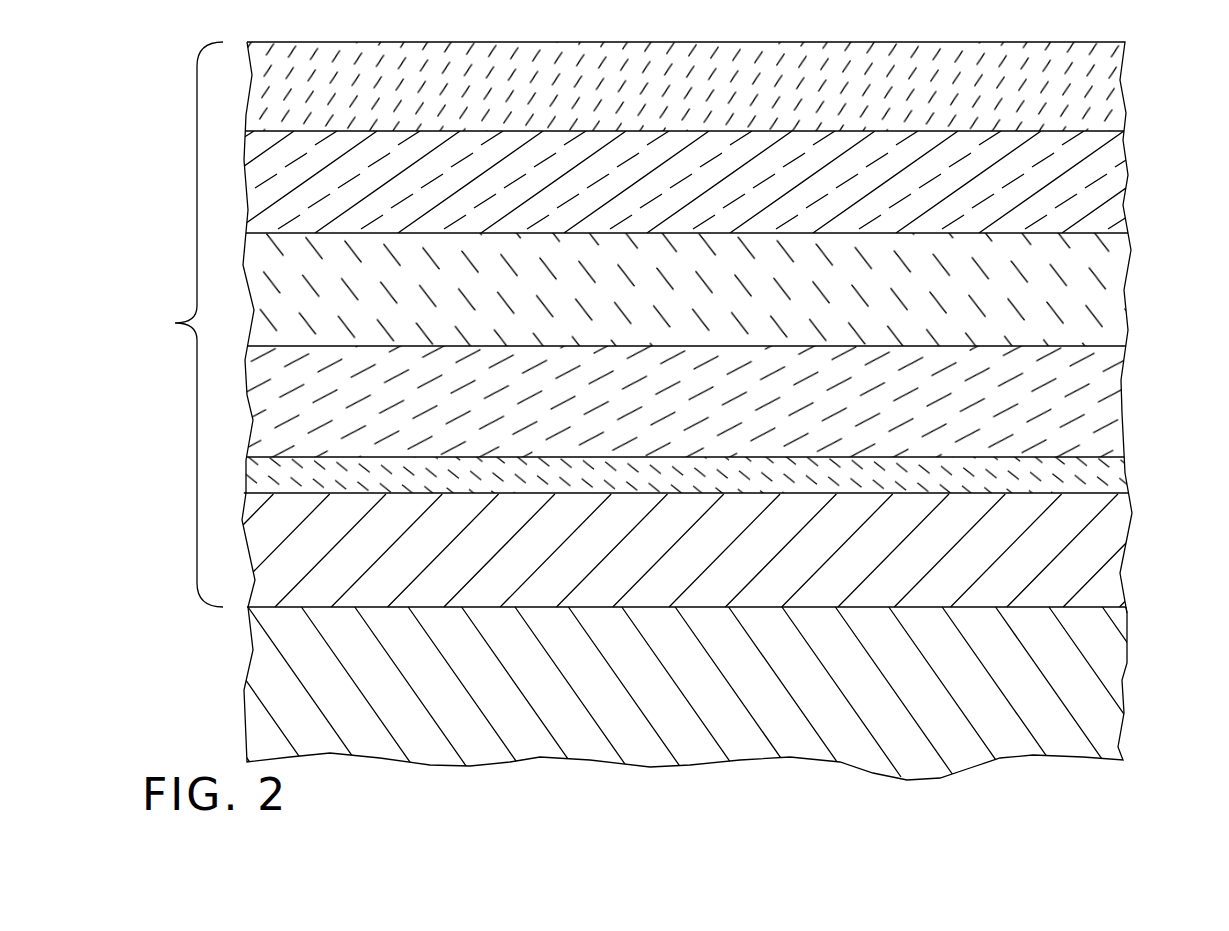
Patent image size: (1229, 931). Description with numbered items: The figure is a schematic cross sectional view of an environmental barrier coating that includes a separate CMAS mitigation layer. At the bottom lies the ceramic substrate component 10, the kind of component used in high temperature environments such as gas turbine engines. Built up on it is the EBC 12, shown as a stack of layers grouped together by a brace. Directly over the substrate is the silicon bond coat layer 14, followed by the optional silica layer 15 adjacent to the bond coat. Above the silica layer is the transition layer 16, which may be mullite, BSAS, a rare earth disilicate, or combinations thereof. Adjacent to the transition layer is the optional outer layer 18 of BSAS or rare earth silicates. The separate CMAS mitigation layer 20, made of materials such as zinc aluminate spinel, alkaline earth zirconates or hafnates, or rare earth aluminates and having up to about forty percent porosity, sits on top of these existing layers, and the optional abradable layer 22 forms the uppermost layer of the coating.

The ceramic substrate component 10 is at (1125, 682).
The environmental barrier coating 12 is at (173, 323).
The silicon bond coat layer 14 is at (1120, 575).
The silica layer 15 is at (1125, 473).
The transition layer 16 is at (1122, 416).
The outer layer 18 is at (1132, 260).
The separate CMAS mitigation layer 20 is at (1127, 172).
The abradable layer 22 is at (1123, 83).